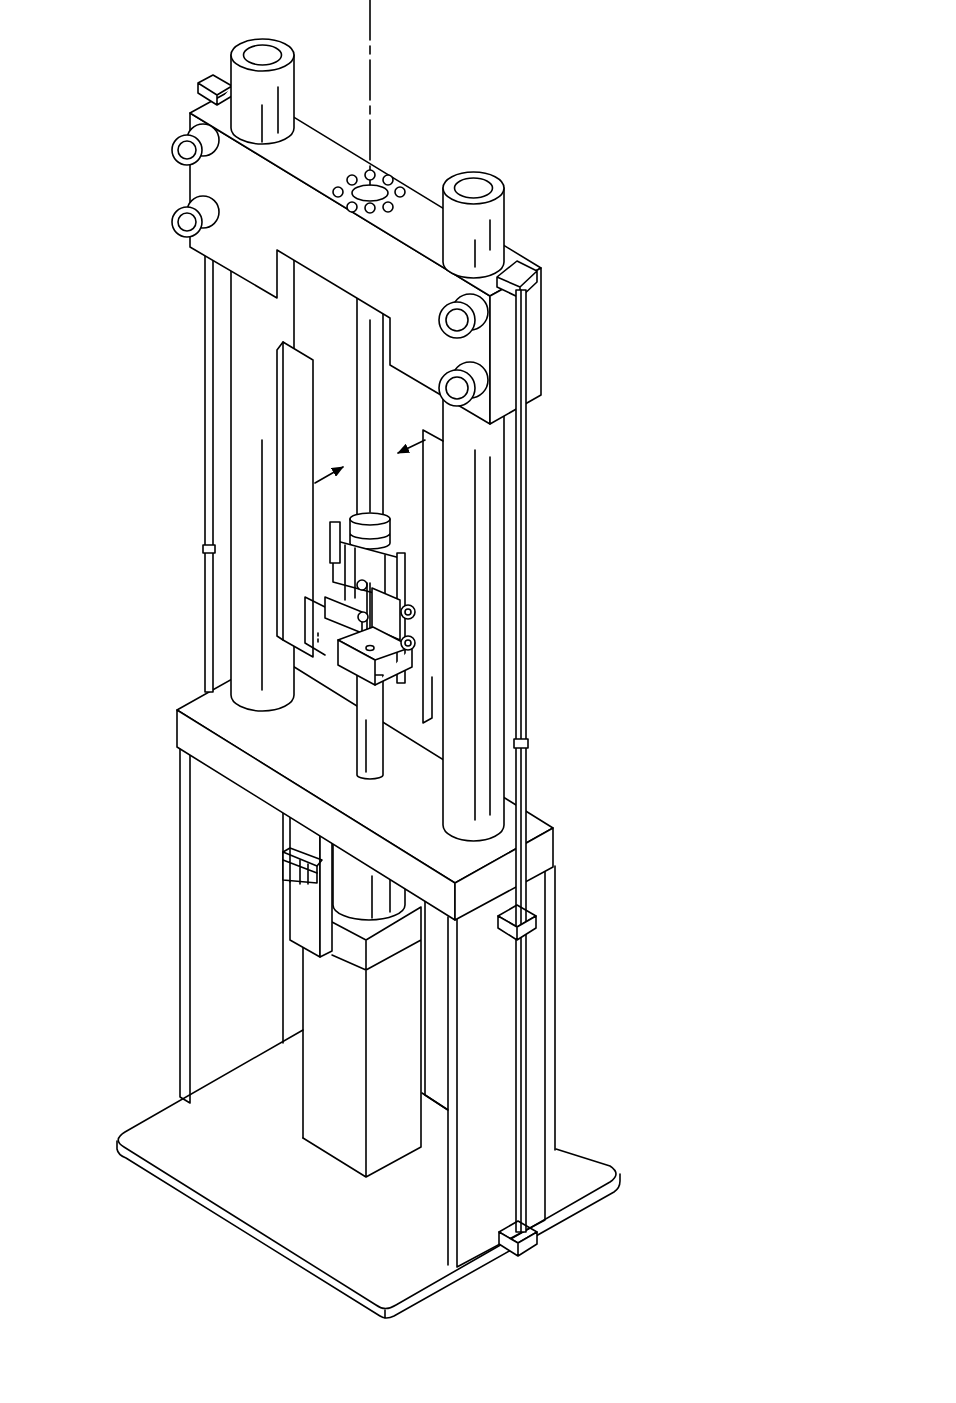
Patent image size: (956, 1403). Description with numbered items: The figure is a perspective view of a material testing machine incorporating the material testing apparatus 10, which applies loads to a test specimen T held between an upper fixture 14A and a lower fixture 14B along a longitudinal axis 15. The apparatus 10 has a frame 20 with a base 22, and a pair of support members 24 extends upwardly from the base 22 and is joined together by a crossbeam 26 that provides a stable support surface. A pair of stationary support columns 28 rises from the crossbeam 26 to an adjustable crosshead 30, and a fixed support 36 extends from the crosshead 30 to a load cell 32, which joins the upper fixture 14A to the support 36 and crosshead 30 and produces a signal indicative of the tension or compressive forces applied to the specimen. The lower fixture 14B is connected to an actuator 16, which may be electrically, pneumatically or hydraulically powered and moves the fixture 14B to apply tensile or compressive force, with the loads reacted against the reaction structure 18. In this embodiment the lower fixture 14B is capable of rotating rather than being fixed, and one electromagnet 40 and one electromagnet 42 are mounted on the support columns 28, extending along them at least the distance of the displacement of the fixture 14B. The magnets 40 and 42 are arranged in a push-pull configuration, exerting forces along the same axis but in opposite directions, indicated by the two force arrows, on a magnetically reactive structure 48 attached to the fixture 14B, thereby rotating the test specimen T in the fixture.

The material testing apparatus 10 is at (613, 318).
The upper fixture 14A is at (412, 563).
The lower fixture 14B is at (408, 655).
The longitudinal axis 15 is at (372, 85).
The actuator 16 is at (278, 887).
The reaction structure 18 is at (133, 154).
The frame 20 is at (568, 884).
The base 22 is at (163, 1173).
The support members 24 is at (185, 1000).
The crossbeam 26 is at (183, 728).
The stationary support columns 28 is at (242, 345).
The adjustable crosshead 30 is at (548, 291).
The load cell 32 is at (391, 518).
The fixed support 36 is at (368, 341).
The electromagnet 40 is at (297, 432).
The electromagnet 42 is at (437, 605).
The structure 48 is at (322, 624).
The test specimen T is at (352, 595).